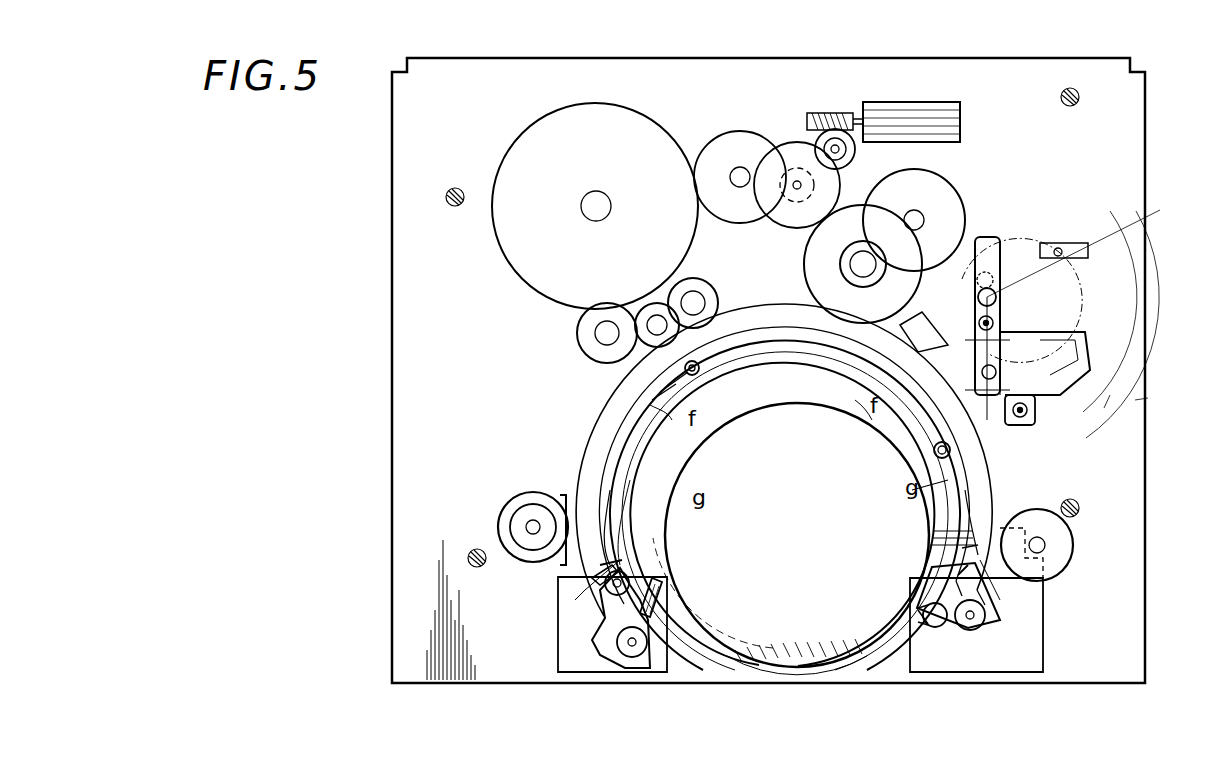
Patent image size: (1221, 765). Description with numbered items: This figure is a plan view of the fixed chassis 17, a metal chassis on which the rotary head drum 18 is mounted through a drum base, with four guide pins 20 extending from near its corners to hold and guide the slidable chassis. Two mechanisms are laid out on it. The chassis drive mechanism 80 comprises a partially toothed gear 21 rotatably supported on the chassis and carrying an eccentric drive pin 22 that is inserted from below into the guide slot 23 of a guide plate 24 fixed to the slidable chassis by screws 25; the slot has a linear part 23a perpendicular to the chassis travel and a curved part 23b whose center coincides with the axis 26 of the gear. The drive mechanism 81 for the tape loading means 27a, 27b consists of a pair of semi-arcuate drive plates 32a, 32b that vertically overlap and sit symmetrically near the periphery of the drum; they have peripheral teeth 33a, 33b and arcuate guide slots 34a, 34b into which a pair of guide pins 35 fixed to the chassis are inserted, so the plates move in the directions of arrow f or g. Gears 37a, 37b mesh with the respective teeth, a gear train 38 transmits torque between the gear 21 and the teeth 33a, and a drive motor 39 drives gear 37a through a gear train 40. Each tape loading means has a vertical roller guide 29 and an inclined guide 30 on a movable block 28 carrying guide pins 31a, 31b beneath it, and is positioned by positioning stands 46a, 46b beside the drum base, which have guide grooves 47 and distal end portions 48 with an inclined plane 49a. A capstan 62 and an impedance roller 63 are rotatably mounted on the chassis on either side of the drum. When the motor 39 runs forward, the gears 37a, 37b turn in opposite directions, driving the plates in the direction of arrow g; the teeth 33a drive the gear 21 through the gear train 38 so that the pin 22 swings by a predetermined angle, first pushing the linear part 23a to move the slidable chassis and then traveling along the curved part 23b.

The fixed chassis 17 is at (410, 288).
The rotary head drum 18 is at (778, 440).
The guide pins 20 is at (455, 207).
The partially toothed gear 21 is at (923, 332).
The drive pin 22 is at (1046, 245).
The guide slot 23 is at (990, 290).
The linear part 23a is at (1065, 245).
The curved part 23b is at (1012, 268).
The guide plate 24 is at (1022, 270).
The screws 25 is at (985, 272).
The axis 26 is at (879, 264).
The tape loading means 27a is at (945, 535).
The tape loading means 27b is at (612, 545).
The movable block 28 is at (590, 628).
The vertical roller guide 29 is at (665, 650).
The inclined guide 30 is at (635, 580).
The guide pin 31a is at (632, 562).
The guide pin 31b is at (660, 612).
The drive plate 32a is at (985, 505).
The drive plate 32b is at (612, 440).
The peripheral teeth 33a is at (990, 478).
The peripheral teeth 33b is at (605, 420).
The arcuate guide slot 34a is at (925, 475).
The arcuate guide slot 34b is at (638, 410).
The guide pins 35 is at (697, 362).
The gear 37a is at (650, 310).
The gear 37b is at (693, 292).
The gear train 38 is at (938, 200).
The drive motor 39 is at (922, 110).
The gear train 40 is at (697, 122).
The positioning stand 46a is at (1030, 652).
The positioning stand 46b is at (560, 662).
The guide grooves 47 is at (600, 620).
The distal end portions 48 is at (1005, 510).
The inclined plane 49a is at (600, 510).
The capstan 62 is at (525, 526).
The impedance roller 63 is at (1068, 547).
The chassis drive mechanism 80 is at (1105, 445).
The drive mechanism 81 is at (535, 340).